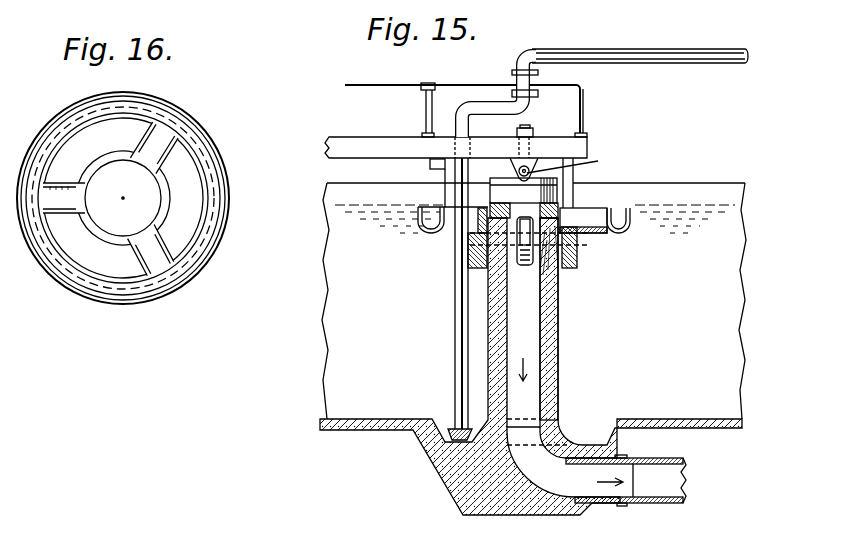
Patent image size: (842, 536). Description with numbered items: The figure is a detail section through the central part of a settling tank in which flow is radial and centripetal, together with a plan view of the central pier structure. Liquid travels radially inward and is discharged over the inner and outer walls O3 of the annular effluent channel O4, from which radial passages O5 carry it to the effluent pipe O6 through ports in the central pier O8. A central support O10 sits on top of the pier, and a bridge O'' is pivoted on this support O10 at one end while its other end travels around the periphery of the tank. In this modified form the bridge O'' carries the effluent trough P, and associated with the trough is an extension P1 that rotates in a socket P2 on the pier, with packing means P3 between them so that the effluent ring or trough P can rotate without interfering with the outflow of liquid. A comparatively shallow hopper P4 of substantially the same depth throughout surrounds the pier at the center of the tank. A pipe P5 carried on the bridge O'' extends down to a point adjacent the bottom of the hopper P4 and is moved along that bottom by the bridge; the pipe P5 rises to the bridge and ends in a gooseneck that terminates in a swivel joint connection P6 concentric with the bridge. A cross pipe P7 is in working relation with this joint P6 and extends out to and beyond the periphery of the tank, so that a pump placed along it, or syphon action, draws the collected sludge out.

In FIG. 16, the inner and outer walls O3 is at (203, 198).
In FIG. 16, the annular effluent channel O4 is at (205, 152).
In FIG. 16, the radial passages O5 is at (153, 143).
In FIG. 15, the effluent pipe O6 is at (530, 337).
In FIG. 15, the central pier O8 is at (558, 372).
In FIG. 15, the central support O10 is at (571, 153).
In FIG. 15, the bridge O'' is at (456, 132).
In FIG. 15, the effluent trough P is at (430, 233).
In FIG. 15, the extension P1 is at (468, 236).
In FIG. 15, the socket P2 is at (568, 268).
In FIG. 15, the packing means P3 is at (482, 268).
In FIG. 15, the hopper P4 is at (590, 430).
In FIG. 15, the pipe P5 is at (457, 333).
In FIG. 15, the swivel joint connection P6 is at (513, 79).
In FIG. 15, the cross pipe P7 is at (672, 60).